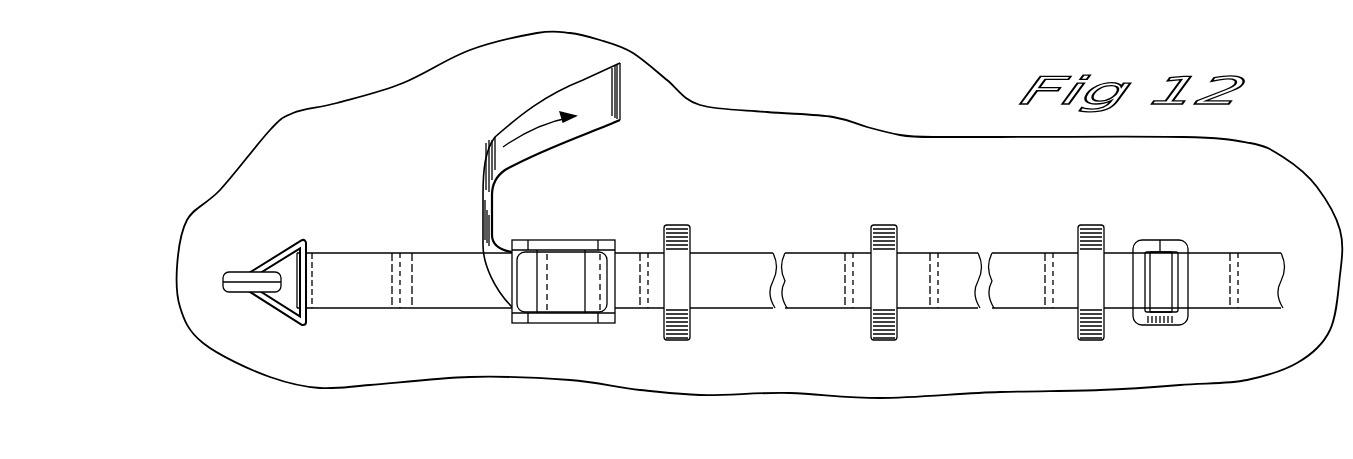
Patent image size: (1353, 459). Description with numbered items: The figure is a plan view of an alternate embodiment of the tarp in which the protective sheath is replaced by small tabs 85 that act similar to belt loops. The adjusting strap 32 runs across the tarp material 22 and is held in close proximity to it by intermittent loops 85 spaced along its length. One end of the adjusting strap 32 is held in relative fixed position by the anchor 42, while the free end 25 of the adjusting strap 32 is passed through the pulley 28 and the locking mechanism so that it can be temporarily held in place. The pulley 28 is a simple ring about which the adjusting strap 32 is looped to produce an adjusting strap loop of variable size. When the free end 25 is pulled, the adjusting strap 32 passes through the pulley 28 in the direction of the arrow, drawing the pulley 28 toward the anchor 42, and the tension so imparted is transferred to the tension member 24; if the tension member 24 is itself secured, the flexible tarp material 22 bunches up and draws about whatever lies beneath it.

The tarp material 22 is at (391, 179).
The tension member 24 is at (1232, 253).
The free end of the adjusting strap 25 is at (527, 103).
The pulley 28 is at (1172, 326).
The adjusting strap 32 is at (733, 265).
The anchor 42 is at (270, 250).
The tabs 85 is at (678, 225).